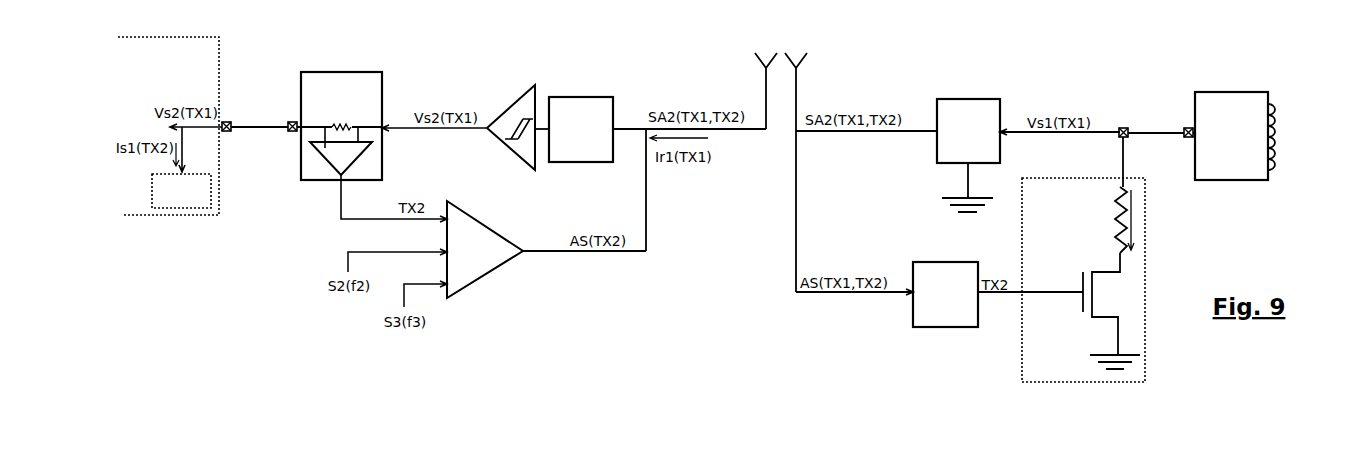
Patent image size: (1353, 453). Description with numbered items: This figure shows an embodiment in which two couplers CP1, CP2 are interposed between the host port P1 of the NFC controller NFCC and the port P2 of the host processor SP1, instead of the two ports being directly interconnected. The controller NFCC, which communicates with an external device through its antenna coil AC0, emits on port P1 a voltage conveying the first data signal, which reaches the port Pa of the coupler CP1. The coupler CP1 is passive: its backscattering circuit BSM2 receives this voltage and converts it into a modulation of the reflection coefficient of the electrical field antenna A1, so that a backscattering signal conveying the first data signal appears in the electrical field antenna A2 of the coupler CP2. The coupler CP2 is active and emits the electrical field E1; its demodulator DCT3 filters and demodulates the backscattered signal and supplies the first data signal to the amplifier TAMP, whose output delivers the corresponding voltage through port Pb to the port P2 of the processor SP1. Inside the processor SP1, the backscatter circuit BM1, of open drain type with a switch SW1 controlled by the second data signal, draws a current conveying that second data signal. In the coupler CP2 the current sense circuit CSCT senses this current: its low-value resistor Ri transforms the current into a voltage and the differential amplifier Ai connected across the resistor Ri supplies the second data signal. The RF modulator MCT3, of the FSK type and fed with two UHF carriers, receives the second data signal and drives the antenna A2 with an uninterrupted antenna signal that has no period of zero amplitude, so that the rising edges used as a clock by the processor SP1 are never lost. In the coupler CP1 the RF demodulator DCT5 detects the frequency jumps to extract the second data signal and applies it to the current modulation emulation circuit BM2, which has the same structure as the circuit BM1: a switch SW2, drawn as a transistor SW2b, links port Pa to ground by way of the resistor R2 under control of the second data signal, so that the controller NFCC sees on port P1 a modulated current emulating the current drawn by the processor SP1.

The host processor SP1 is at (168, 126).
The backscatter circuit BM1 is at (181, 191).
The port P2 is at (230, 122).
The switch SW1 is at (259, 118).
The port Pb is at (291, 132).
The current sense circuit CSCT is at (339, 126).
The resistor Ri is at (341, 119).
The differential amplifier Ai is at (341, 151).
The amplifier TAMP is at (536, 98).
The demodulator DCT3 is at (581, 129).
The RF modulator MCT3 is at (485, 249).
The coupler CP2 is at (518, 353).
The electrical field antenna A2 is at (758, 56).
The electrical field antenna A1 is at (805, 58).
The electrical field E1 is at (760, 48).
The backscattering circuit BSM2 is at (968, 155).
The port Pa is at (1122, 127).
The switch SW2 is at (1156, 124).
The second switch transistor SW2b is at (1082, 311).
The port P1 is at (1187, 127).
The controller NFCC is at (1230, 136).
The antenna coil AC0 is at (1283, 108).
The current modulation emulation circuit BM2 is at (1108, 259).
The resistor R2 is at (1104, 220).
The RF demodulator DCT5 is at (945, 294).
The coupler CP1 is at (848, 363).